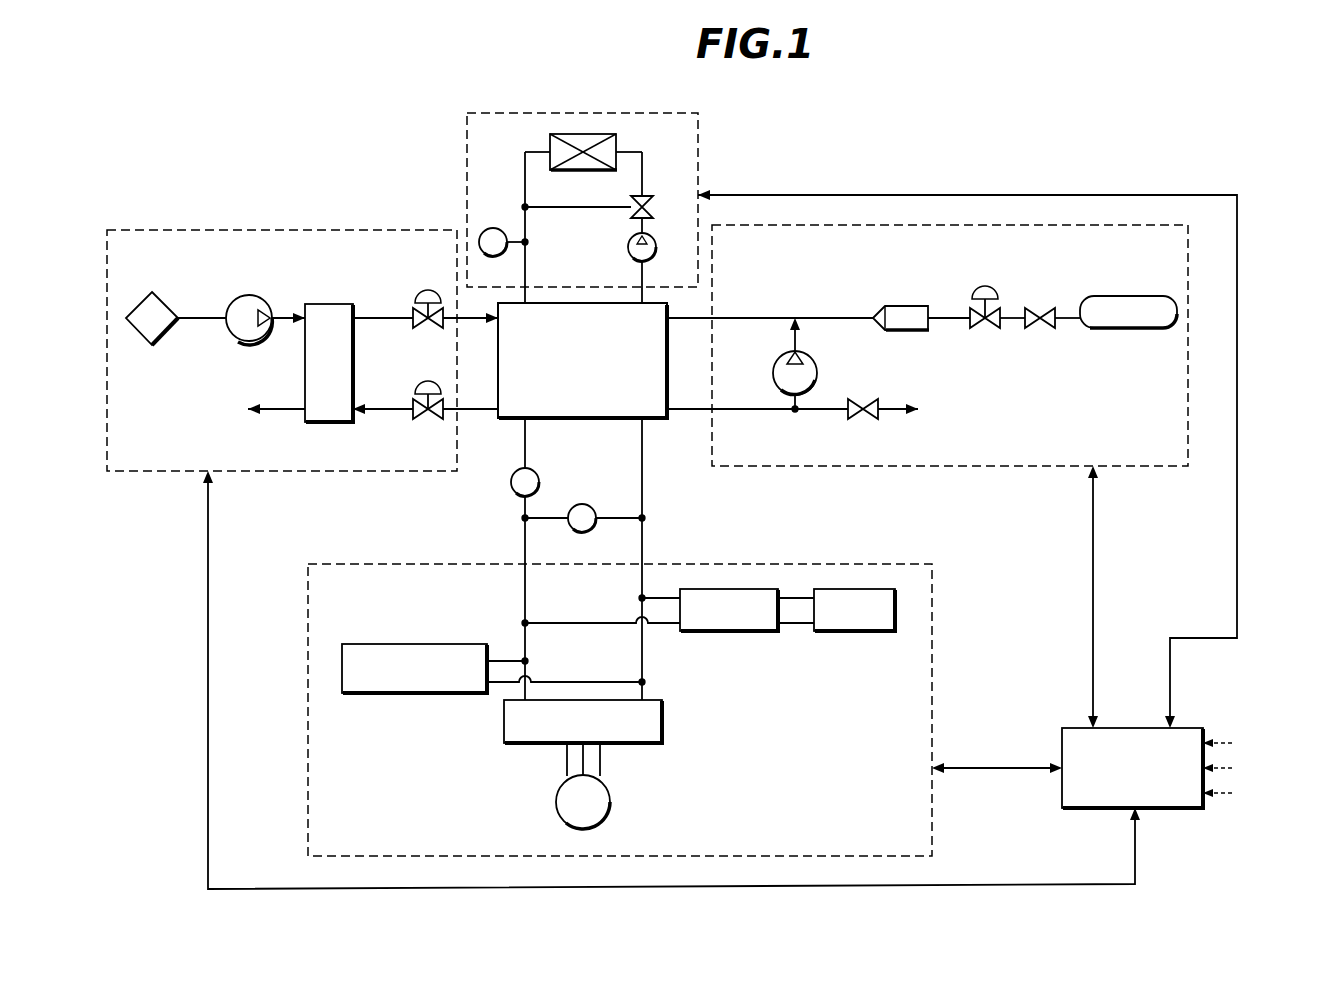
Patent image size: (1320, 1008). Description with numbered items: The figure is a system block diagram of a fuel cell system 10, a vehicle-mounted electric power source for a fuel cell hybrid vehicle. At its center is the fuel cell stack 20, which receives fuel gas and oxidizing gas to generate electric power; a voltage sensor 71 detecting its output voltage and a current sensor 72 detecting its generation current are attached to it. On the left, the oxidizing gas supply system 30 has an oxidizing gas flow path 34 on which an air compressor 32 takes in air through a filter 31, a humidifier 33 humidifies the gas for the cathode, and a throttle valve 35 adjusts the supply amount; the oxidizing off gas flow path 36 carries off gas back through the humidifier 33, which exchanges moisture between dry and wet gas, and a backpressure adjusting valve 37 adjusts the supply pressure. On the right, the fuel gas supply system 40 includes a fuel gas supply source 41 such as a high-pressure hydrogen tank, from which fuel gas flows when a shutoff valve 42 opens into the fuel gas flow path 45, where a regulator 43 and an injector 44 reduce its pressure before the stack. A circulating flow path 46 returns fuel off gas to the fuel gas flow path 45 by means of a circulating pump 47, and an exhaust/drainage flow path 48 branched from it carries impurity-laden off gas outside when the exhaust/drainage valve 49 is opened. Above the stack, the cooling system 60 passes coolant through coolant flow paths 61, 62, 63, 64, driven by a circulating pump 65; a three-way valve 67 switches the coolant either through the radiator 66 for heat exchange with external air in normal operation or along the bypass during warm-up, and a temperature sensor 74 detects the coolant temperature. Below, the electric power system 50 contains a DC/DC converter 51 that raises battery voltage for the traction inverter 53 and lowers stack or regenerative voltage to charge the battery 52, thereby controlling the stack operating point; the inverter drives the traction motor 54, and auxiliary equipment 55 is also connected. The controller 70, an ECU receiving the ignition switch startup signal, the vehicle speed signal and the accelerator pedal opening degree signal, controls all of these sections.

The fuel cell system 10 is at (1005, 145).
The fuel cell stack 20 is at (655, 418).
The oxidizing gas supply system 30 is at (252, 230).
The filter 31 is at (165, 302).
The air compressor 32 is at (245, 296).
The humidifier 33 is at (330, 304).
The oxidizing gas flow path 34 is at (370, 318).
The throttle valve 35 is at (428, 290).
The oxidizing off gas flow path 36 is at (392, 409).
The backpressure adjusting valve 37 is at (428, 381).
The fuel gas supply system 40 is at (1128, 468).
The fuel gas supply source 41 is at (1125, 296).
The shutoff valve 42 is at (1043, 306).
The regulator 43 is at (985, 286).
The injector 44 is at (905, 306).
The fuel gas flow path 45 is at (730, 318).
The circulating flow path 46 is at (725, 409).
The circulating pump 47 is at (817, 373).
The exhaust/drainage flow path 48 is at (888, 409).
The exhaust/drainage valve 49 is at (855, 419).
The electric power system 50 is at (932, 600).
The DC/DC converter 51 is at (730, 631).
The battery 52 is at (845, 631).
The traction inverter 53 is at (662, 728).
The traction motor 54 is at (610, 800).
The auxiliary equipment 55 is at (418, 644).
The cooling system 60 is at (700, 118).
The coolant flow path 61 is at (645, 280).
The coolant flow path 62 is at (605, 207).
The coolant flow path 63 is at (526, 252).
The coolant flow path 64 is at (630, 150).
The circulating pump 65 is at (651, 238).
The radiator 66 is at (592, 170).
The three-way valve 67 is at (648, 196).
The controller 70 is at (1185, 728).
The voltage sensor 71 is at (593, 530).
The current sensor 72 is at (513, 492).
The temperature sensor 74 is at (490, 228).